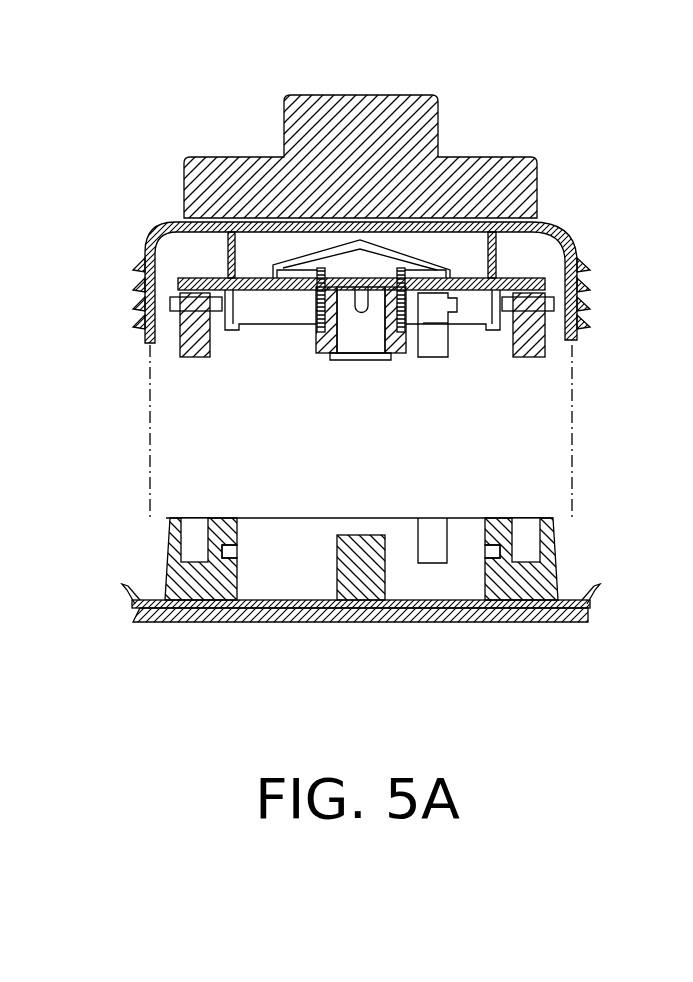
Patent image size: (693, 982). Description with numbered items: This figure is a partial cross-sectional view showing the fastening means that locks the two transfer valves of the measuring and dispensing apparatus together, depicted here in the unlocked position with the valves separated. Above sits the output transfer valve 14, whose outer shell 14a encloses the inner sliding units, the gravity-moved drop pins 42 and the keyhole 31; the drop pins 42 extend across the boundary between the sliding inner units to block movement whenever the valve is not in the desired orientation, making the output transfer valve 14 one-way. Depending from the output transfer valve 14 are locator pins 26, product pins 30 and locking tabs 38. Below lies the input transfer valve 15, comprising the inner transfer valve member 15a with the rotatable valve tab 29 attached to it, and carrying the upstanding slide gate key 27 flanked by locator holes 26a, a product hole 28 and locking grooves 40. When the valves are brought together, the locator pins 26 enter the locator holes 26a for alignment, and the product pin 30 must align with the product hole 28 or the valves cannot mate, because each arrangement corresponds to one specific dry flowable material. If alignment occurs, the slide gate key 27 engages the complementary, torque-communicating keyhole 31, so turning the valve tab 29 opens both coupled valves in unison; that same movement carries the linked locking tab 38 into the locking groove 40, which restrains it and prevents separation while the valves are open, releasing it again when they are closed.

The output transfer valve 14 is at (379, 278).
The outer shell 14a is at (573, 242).
The input transfer valve 15 is at (353, 580).
The inner transfer valve member 15a is at (368, 530).
The locator pin 26 is at (193, 358).
The locator hole 26a is at (190, 530).
The slide gate key 27 is at (335, 572).
The product hole 28 is at (432, 532).
The valve tab 29 is at (122, 592).
The product pin 30 is at (435, 342).
The keyhole 31 is at (512, 157).
The locking tab 38 is at (224, 332).
The locking groove 40 is at (233, 548).
The drop pin 42 is at (297, 330).